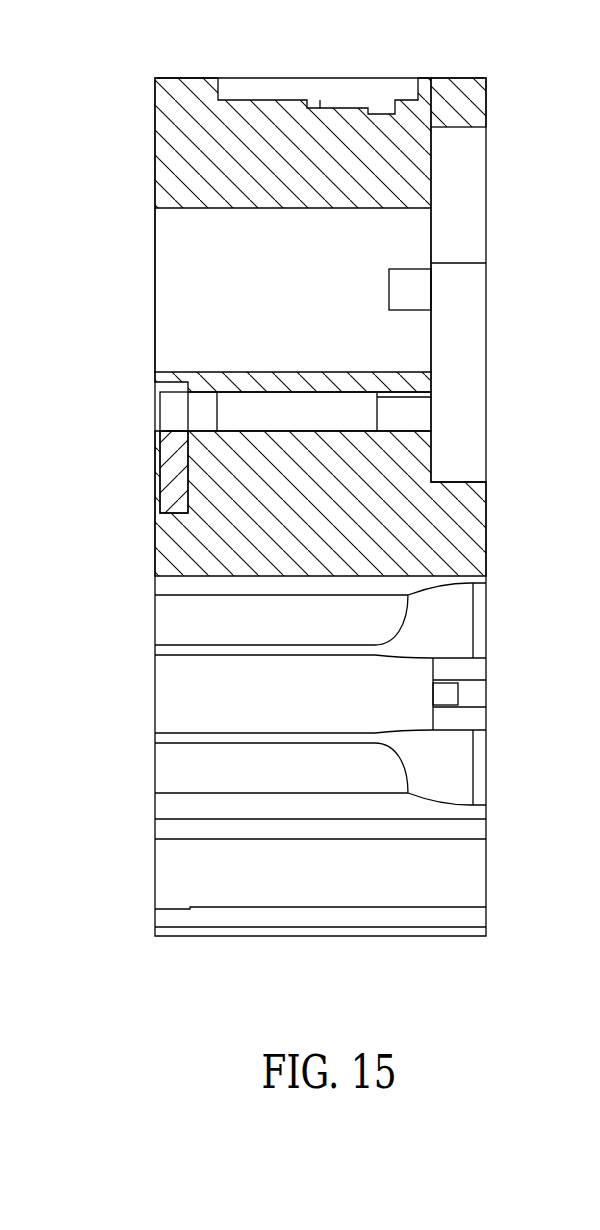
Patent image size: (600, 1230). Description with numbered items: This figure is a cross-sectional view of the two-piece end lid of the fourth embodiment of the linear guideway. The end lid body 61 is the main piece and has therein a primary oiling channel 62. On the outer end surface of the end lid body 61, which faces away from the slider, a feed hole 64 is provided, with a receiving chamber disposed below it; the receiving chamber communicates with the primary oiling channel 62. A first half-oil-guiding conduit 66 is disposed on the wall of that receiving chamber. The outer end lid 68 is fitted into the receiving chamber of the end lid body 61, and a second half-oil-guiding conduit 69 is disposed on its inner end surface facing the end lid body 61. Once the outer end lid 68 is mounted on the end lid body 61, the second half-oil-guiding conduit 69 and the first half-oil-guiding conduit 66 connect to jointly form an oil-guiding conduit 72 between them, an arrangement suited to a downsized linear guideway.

The end lid body 61 is at (183, 152).
The primary oiling channel 62 is at (347, 418).
The feed hole 64 is at (193, 246).
The first half-oil-guiding conduit 66 is at (203, 418).
The outer end lid 68 is at (172, 490).
The second half-oil-guiding conduit 69 is at (173, 411).
The oil-guiding conduit 72 is at (227, 429).